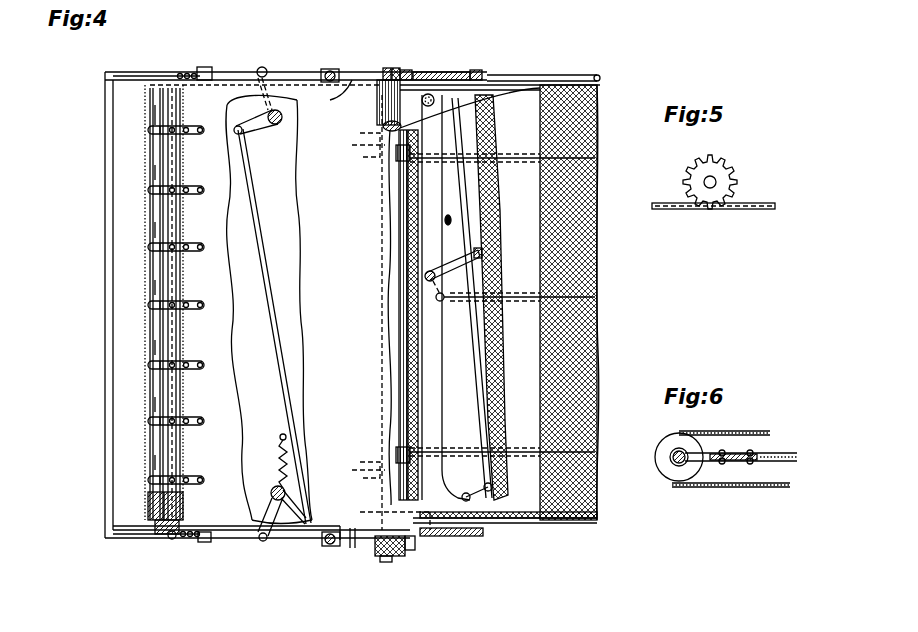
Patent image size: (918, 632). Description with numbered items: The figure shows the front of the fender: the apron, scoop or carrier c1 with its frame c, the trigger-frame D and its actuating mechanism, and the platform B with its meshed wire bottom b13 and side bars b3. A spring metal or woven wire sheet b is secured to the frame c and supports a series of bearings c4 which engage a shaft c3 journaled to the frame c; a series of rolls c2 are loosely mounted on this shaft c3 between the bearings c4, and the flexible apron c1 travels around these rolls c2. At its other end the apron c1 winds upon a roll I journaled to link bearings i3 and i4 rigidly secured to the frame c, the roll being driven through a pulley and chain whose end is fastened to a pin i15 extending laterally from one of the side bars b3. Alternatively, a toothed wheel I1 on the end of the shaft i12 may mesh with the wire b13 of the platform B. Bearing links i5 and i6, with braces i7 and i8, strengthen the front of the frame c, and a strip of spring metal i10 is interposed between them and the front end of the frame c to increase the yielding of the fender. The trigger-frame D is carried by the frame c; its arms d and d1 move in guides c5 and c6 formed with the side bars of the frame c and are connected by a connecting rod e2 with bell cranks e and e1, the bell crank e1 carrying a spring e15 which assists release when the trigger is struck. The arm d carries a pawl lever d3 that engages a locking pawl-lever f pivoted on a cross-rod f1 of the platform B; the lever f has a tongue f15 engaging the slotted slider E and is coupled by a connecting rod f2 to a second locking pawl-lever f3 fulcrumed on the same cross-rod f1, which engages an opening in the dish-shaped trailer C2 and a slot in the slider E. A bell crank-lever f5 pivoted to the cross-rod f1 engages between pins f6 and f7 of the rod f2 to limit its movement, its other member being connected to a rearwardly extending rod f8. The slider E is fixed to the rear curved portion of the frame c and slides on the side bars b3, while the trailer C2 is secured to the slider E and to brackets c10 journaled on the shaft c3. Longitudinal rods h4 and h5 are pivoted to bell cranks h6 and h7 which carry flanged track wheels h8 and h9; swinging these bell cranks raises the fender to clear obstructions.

In FIG. 4, the trigger-frame D is at (108, 328).
In FIG. 4, the arm of trigger-frame d is at (140, 72).
In FIG. 4, the arm of trigger-frame d1 is at (146, 540).
In FIG. 4, the pawl lever d3 is at (410, 78).
In FIG. 4, the frame c is at (333, 97).
In FIG. 4, the apron, scoop or carrier c1 is at (147, 286).
In FIG. 6, the apron, scoop or carrier c1 is at (768, 433).
In FIG. 4, the rolls c2 is at (156, 170).
In FIG. 6, the rolls c2 is at (678, 478).
In FIG. 4, the shaft c3 is at (165, 508).
In FIG. 6, the shaft c3 is at (673, 462).
In FIG. 4, the bearings c4 is at (198, 244).
In FIG. 6, the bearings c4 is at (748, 464).
In FIG. 4, the guide or way c5 is at (206, 68).
In FIG. 4, the guide or way c6 is at (207, 544).
In FIG. 4, the brackets c10 is at (148, 86).
In FIG. 4, the trailer C2 is at (318, 524).
In FIG. 4, the spring metal or woven wire sheet b is at (270, 309).
In FIG. 6, the spring metal or woven wire sheet b is at (792, 464).
In FIG. 4, the side bars b3 is at (592, 79).
In FIG. 4, the meshed wire bottom b13 is at (590, 250).
In FIG. 5, the meshed wire bottom b13 is at (748, 210).
In FIG. 4, the platform B is at (597, 340).
In FIG. 4, the bell crank e is at (272, 126).
In FIG. 4, the bell crank lever e1 is at (279, 506).
In FIG. 4, the connecting rod e2 is at (270, 305).
In FIG. 4, the spring e15 is at (281, 436).
In FIG. 4, the locking pawl-lever f is at (434, 104).
In FIG. 4, the cross-rod f1 is at (440, 421).
In FIG. 4, the connecting rod f2 is at (476, 402).
In FIG. 4, the locking pawl-lever f3 is at (467, 492).
In FIG. 4, the bell crank-lever f5 is at (450, 268).
In FIG. 4, the pin f6 is at (480, 250).
In FIG. 4, the pin f7 is at (482, 256).
In FIG. 4, the rod f8 is at (441, 304).
In FIG. 4, the tongue f15 is at (474, 76).
In FIG. 4, the longitudinal rod h4 is at (597, 160).
In FIG. 4, the longitudinal rod h5 is at (597, 452).
In FIG. 4, the bell crank h6 is at (395, 160).
In FIG. 4, the bell crank h7 is at (395, 452).
In FIG. 4, the flanged wheel h8 is at (358, 145).
In FIG. 4, the flanged wheel h9 is at (372, 478).
In FIG. 4, the link bearing i3 is at (384, 72).
In FIG. 4, the link bearing i4 is at (356, 550).
In FIG. 4, the bearing link i5 is at (330, 70).
In FIG. 4, the bearing link i6 is at (332, 548).
In FIG. 4, the brace i7 is at (270, 74).
In FIG. 4, the brace i8 is at (173, 540).
In FIG. 4, the spring metal strip i10 is at (220, 80).
In FIG. 4, the shaft i12 is at (395, 68).
In FIG. 5, the shaft i12 is at (716, 181).
In FIG. 4, the pin i15 is at (414, 552).
In FIG. 4, the roll I is at (377, 108).
In FIG. 5, the toothed wheel I1 is at (712, 200).
In FIG. 4, the slider E is at (440, 74).